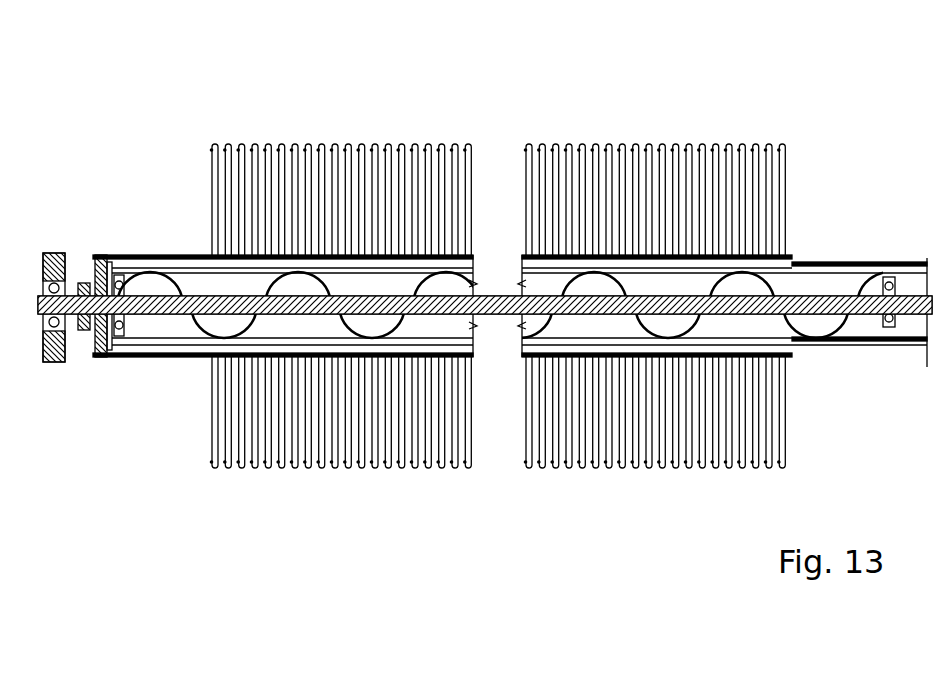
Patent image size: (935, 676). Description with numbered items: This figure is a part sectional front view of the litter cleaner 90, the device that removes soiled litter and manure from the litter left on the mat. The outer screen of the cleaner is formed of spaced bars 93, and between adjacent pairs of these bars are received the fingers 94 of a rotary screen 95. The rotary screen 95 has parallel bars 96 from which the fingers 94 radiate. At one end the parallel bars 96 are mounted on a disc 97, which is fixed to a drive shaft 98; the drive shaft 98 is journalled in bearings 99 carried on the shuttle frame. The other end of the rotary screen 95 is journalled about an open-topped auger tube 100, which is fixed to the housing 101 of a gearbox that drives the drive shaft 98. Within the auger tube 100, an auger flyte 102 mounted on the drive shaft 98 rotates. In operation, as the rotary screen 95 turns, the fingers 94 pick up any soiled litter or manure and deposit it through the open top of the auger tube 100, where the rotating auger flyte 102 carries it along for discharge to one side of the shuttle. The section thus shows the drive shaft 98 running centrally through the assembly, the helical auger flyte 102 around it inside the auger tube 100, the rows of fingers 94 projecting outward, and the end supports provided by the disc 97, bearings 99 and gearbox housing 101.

The litter cleaner 90 is at (385, 118).
The spaced bars 93 is at (642, 142).
The fingers 94 is at (778, 198).
The rotary screen 95 is at (151, 246).
The parallel bars 96 is at (788, 254).
The disc 97 is at (102, 353).
The drive shaft 98 is at (68, 318).
The bearings 99 is at (52, 253).
The auger tube 100 is at (870, 342).
The housing 101 is at (927, 256).
The auger flyte 102 is at (813, 328).